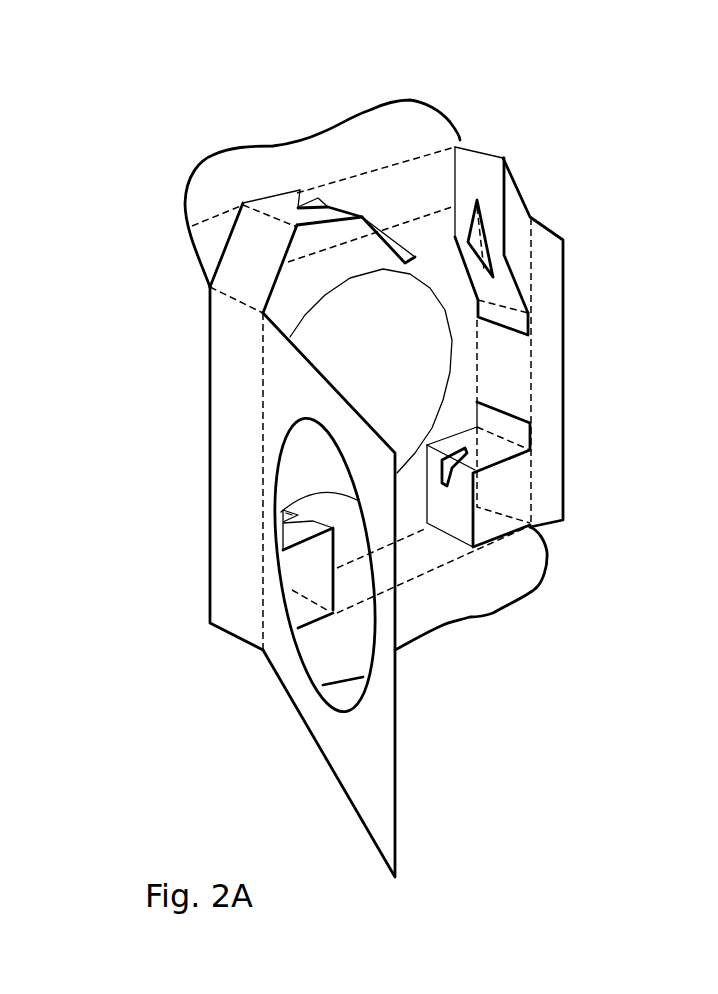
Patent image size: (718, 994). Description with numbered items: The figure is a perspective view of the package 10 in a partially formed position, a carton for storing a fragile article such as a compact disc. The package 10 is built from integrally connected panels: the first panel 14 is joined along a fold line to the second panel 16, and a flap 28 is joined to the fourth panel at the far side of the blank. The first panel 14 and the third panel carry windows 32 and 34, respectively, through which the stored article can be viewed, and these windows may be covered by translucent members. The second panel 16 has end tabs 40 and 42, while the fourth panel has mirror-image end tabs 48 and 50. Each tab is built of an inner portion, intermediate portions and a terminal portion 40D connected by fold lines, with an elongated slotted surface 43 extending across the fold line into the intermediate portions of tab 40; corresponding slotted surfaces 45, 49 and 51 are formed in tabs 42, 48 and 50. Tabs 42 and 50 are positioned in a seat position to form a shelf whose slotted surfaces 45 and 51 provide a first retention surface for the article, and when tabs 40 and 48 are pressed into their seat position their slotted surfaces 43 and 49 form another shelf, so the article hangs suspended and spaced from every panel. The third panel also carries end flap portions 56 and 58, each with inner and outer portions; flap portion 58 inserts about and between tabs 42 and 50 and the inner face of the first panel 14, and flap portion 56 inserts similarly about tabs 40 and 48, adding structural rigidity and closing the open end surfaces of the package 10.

The package 10 is at (637, 137).
The first panel 14 is at (343, 753).
The second panel 16 is at (222, 560).
The flap 28 is at (547, 250).
The window 32 is at (352, 652).
The window 34 is at (448, 350).
The end tab 40 is at (240, 245).
The terminal portion 40D is at (415, 255).
The end tab 42 is at (315, 558).
The elongated slotted surface 43 is at (303, 193).
The slotted surface 45 is at (287, 500).
The end tab 48 is at (517, 177).
The slotted surface 49 is at (477, 207).
The end tab 50 is at (488, 448).
The slotted surface 51 is at (453, 457).
The end flap portion 56 is at (217, 155).
The end flap portion 58 is at (460, 620).